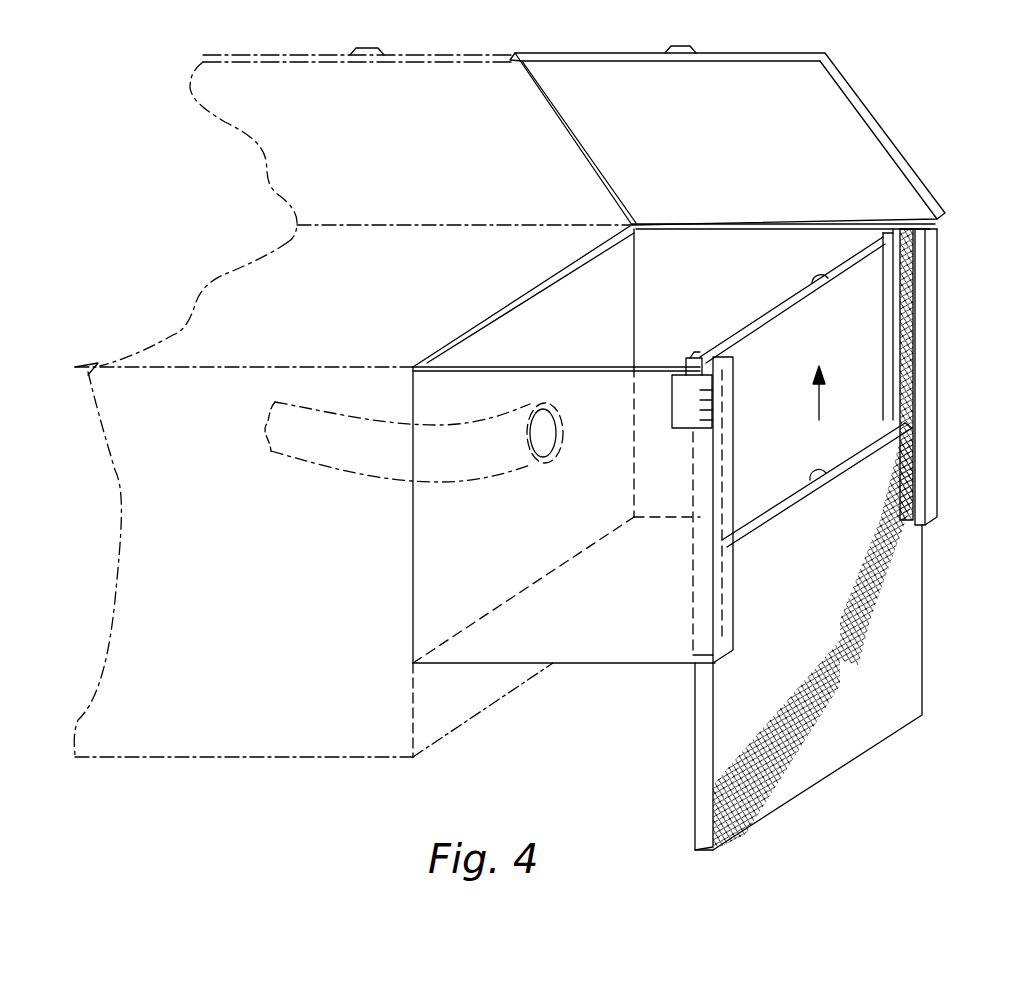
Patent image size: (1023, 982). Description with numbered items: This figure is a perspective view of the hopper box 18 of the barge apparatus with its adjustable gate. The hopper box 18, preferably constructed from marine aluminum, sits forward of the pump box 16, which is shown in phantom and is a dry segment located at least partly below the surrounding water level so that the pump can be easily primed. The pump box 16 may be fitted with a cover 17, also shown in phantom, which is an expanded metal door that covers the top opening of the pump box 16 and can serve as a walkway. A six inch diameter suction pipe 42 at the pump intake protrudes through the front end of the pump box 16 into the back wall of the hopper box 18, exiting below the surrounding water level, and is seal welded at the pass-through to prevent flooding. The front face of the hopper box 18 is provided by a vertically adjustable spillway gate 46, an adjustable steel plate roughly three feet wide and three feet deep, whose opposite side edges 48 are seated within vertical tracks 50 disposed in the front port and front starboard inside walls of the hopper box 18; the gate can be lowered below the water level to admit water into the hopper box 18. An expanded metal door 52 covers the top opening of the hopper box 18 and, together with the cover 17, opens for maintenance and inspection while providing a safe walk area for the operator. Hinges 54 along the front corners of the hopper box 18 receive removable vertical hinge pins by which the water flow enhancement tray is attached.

The pump box 16 is at (222, 662).
The cover 17 is at (400, 164).
The hopper box 18 is at (590, 620).
The suction pipe 42 is at (445, 485).
The spillway gate 46 is at (866, 690).
The side edges 48 is at (700, 772).
The vertical tracks 50 is at (908, 320).
The door 52 is at (745, 156).
The hinges 54 is at (672, 410).